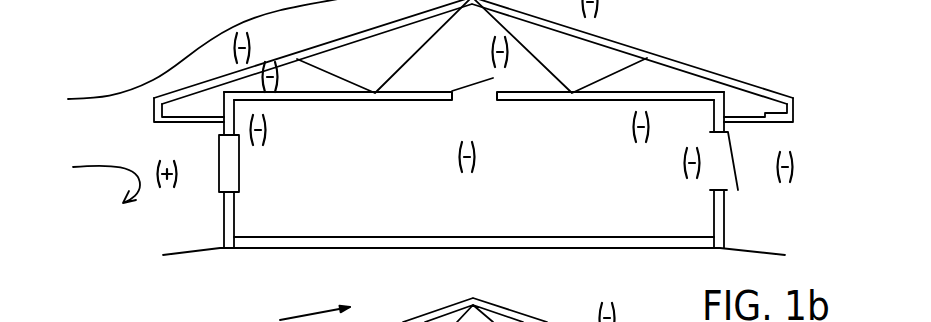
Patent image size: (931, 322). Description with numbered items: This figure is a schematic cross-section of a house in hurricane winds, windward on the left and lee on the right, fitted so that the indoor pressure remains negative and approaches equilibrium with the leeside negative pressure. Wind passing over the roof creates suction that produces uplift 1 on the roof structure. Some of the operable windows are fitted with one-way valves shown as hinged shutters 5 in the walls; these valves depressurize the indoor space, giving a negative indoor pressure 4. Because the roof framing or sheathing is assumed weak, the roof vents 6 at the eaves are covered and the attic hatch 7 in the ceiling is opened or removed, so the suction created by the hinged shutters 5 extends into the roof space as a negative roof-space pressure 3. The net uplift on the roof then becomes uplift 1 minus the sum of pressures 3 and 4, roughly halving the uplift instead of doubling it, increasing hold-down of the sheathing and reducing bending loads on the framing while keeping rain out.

The uplift 1 is at (325, 68).
The roof-space pressure 3 is at (472, 46).
The indoor pressure 4 is at (330, 103).
The hinged shutters 5 is at (486, 170).
The roof vents 6 is at (473, 128).
The attic hatch 7 is at (472, 98).